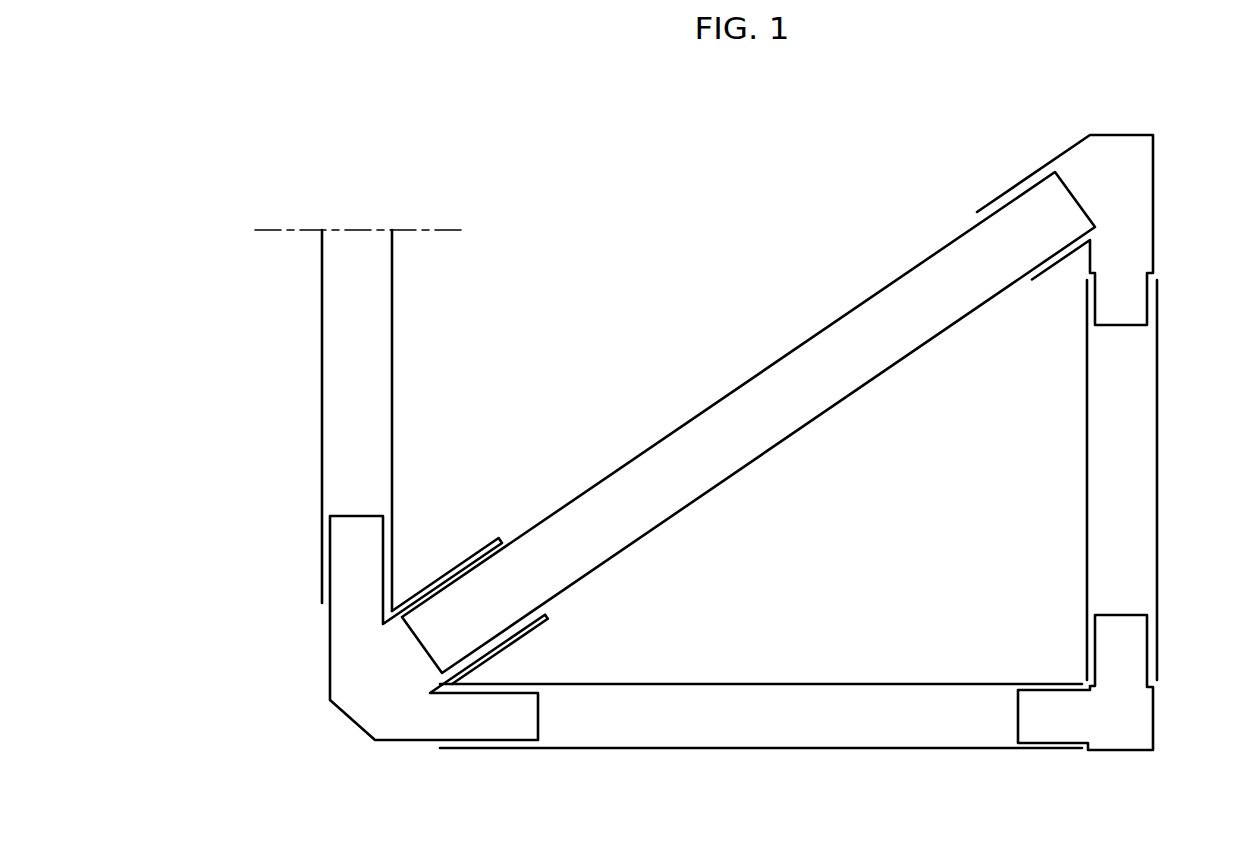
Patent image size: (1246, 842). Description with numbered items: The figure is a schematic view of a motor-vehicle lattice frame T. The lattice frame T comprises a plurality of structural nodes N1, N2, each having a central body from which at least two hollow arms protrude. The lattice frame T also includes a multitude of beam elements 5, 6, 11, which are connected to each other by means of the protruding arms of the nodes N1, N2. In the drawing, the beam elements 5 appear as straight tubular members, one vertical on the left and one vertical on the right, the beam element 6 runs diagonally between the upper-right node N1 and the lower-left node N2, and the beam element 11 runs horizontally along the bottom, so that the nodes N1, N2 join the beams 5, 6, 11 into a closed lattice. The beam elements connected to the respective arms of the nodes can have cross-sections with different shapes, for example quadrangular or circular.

The motor-vehicle lattice frame T is at (284, 414).
The beam element 5 is at (393, 456).
The beam element 6 is at (728, 394).
The beam element 11 is at (778, 750).
The structural node N1 is at (1153, 200).
The structural node N2 is at (355, 722).